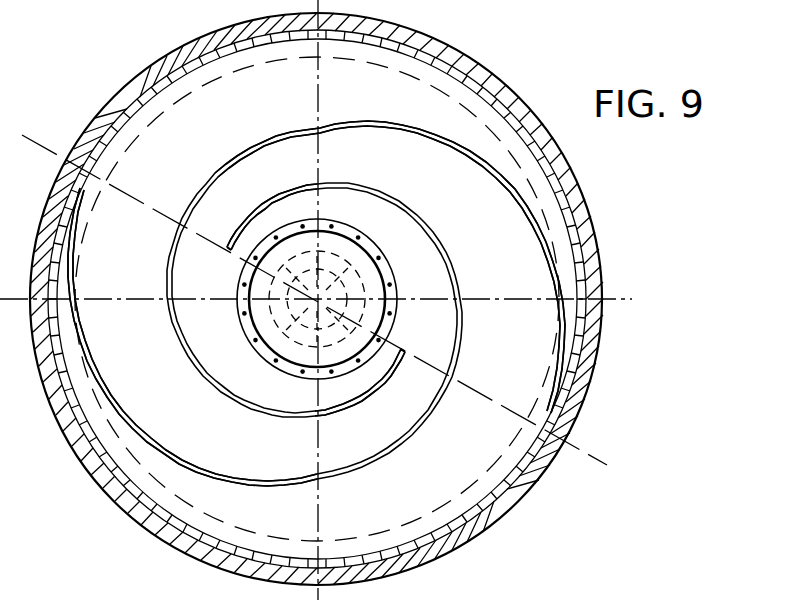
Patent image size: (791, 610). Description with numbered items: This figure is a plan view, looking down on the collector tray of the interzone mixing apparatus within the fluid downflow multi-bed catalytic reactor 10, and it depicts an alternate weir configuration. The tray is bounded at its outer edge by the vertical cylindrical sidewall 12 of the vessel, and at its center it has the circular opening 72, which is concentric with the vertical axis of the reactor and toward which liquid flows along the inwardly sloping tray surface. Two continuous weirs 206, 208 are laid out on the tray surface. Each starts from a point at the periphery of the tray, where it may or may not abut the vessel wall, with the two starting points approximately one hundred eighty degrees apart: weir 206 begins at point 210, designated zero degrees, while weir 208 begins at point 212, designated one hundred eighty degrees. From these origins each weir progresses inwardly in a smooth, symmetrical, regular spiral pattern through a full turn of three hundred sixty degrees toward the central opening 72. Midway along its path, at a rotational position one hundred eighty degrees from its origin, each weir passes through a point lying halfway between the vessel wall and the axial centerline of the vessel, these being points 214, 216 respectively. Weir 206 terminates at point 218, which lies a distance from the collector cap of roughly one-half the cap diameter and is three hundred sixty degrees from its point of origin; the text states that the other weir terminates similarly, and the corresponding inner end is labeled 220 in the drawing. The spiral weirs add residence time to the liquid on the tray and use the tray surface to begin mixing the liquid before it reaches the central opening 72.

The fluid downflow multi-bed catalytic reactor 10 is at (100, 112).
The vertical cylindrical sidewall 12 is at (97, 480).
The circular opening 72 is at (392, 287).
The continuous weir 206 is at (193, 473).
The continuous weir 208 is at (397, 121).
The starting point of weir 210 is at (107, 167).
The starting point of weir 212 is at (540, 428).
The mid-way point 214 is at (452, 377).
The mid-way point 216 is at (183, 225).
The termination point of weir 218 is at (227, 248).
The spiral wall inner end 220 is at (405, 353).